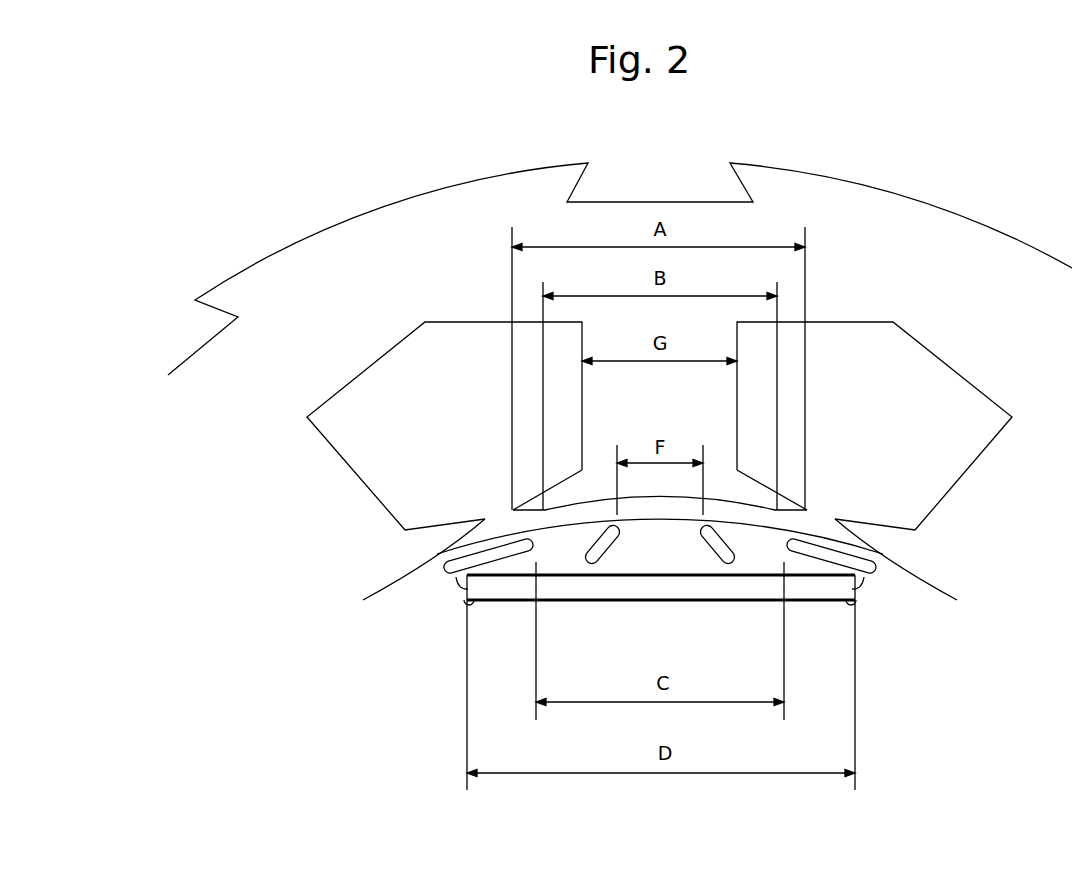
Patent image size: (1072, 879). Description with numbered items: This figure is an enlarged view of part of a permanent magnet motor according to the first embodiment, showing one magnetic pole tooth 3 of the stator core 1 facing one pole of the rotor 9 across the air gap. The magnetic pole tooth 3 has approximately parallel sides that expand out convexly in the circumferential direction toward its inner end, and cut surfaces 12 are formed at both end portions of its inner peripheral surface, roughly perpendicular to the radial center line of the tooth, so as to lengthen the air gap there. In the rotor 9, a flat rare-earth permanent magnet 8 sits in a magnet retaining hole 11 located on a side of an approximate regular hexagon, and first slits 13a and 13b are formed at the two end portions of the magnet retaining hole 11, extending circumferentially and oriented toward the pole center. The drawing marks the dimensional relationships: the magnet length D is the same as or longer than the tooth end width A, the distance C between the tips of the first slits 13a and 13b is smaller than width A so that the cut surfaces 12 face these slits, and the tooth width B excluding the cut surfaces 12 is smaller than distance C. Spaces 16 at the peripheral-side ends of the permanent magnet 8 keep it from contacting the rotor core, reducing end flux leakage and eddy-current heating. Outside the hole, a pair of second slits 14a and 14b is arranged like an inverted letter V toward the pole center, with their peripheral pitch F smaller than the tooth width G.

The stator core 1 is at (973, 232).
The magnetic pole tooth 3 is at (692, 398).
The permanent magnet 8 is at (563, 587).
The rotor 9 is at (650, 647).
The magnet retaining hole 11 is at (807, 603).
The cut surface 12 is at (483, 530).
The first slit 13a is at (505, 560).
The first slit 13b is at (820, 555).
The second slit 14a is at (607, 542).
The second slit 14b is at (722, 562).
The space 16 is at (452, 577).